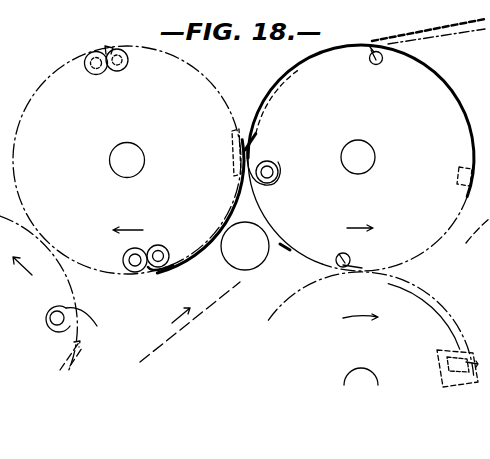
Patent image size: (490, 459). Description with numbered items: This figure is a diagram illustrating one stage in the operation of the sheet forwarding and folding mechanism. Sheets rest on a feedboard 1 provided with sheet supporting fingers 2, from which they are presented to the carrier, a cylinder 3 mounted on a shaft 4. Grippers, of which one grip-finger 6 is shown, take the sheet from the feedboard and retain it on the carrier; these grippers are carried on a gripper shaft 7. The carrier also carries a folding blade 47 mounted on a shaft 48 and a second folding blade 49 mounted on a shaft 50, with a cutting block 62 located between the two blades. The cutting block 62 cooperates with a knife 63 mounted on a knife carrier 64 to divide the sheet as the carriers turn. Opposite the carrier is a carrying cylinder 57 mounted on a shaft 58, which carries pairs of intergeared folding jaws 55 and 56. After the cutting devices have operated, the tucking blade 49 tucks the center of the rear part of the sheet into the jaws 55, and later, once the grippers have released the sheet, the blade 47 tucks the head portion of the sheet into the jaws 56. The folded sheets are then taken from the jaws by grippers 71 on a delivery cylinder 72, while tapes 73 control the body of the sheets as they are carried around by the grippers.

The feedboard 1 is at (435, 35).
The sheet supporting fingers 2 is at (377, 39).
The cylinder 3 is at (455, 100).
The shaft 4 is at (358, 157).
The grip-finger 6 is at (249, 157).
The gripper supporting shaft 7 is at (278, 172).
The folding blade 47 is at (370, 47).
The shaft 48 is at (380, 67).
The second folding blade 49 is at (362, 261).
The shaft 50 is at (346, 254).
The folding jaws 55 is at (164, 249).
The folding jaws 56 is at (112, 69).
The carrying cylinder 57 is at (213, 85).
The shaft 58 is at (127, 160).
The cutting block 62 is at (458, 176).
The knife 63 is at (465, 362).
The knife carrier 64 is at (420, 294).
The grippers 71 is at (83, 312).
The delivery cylinder 72 is at (63, 271).
The tapes 73 is at (242, 271).